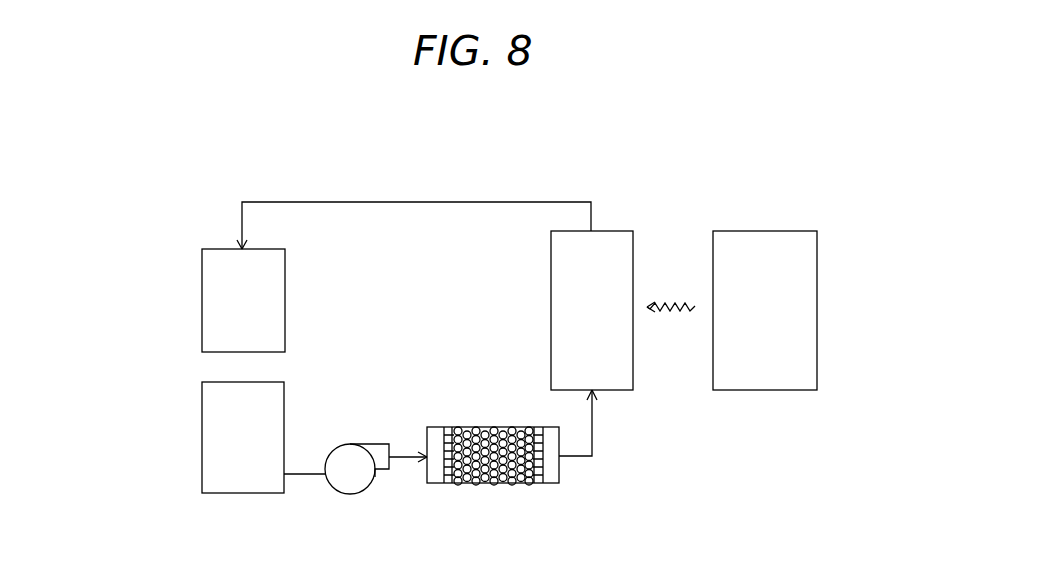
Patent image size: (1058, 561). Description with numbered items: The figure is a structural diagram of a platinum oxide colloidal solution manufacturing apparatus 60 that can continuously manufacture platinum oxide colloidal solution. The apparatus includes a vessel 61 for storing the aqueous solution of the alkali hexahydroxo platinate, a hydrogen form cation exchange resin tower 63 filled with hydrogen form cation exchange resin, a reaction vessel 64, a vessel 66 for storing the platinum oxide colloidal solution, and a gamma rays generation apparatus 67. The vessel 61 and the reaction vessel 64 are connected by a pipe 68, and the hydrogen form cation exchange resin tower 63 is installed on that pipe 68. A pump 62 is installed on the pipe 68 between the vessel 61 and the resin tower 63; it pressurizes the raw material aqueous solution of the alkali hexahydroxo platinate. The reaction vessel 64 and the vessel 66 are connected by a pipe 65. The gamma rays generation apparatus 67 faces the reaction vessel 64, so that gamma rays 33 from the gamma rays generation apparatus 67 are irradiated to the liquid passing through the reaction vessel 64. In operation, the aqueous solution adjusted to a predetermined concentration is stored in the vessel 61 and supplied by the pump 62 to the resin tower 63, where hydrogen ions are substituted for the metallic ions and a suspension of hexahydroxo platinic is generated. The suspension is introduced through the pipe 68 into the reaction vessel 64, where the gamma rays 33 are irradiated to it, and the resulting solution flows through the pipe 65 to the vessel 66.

The platinum oxide colloidal solution manufacturing apparatus 60 is at (551, 152).
The vessel 61 is at (202, 427).
The pump 62 is at (372, 446).
The hydrogen form cation exchange resin tower 63 is at (485, 427).
The reaction vessel 64 is at (610, 231).
The pipe 65 is at (437, 202).
The vessel 66 is at (202, 296).
The gamma rays generation apparatus 67 is at (763, 231).
The pipe 68 is at (592, 427).
The gamma rays 33 is at (673, 302).